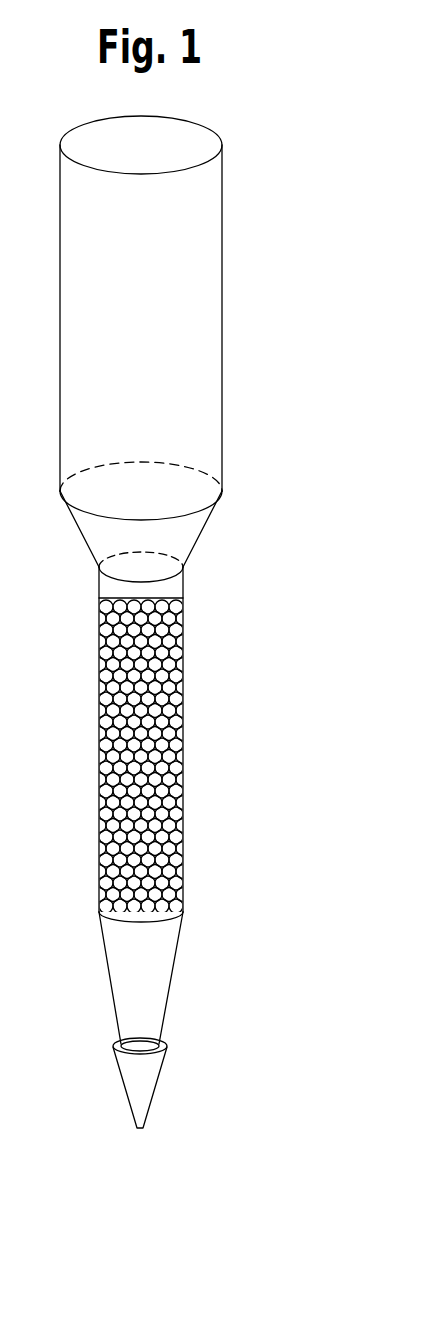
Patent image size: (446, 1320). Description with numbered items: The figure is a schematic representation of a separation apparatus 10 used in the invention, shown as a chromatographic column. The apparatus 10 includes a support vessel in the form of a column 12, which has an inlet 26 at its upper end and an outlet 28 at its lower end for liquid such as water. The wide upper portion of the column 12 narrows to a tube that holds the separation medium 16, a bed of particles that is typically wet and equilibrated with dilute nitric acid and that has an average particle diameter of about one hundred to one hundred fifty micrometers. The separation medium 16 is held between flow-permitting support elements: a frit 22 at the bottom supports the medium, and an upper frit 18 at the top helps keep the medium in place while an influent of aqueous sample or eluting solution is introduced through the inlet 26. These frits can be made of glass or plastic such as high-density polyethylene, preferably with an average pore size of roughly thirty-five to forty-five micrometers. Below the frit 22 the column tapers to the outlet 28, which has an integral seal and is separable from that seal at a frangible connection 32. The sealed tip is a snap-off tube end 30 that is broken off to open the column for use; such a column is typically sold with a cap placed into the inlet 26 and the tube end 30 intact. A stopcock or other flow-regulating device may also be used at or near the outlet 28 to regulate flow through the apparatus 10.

The separation apparatus 10 is at (252, 485).
The column 12 is at (188, 273).
The separation medium 16 is at (170, 790).
The upper frit 18 is at (158, 618).
The frit 22 is at (163, 918).
The inlet 26 is at (183, 138).
The outlet 28 is at (138, 1047).
The snap-off tube end 30 is at (145, 1123).
The frangible connection 32 is at (168, 1043).